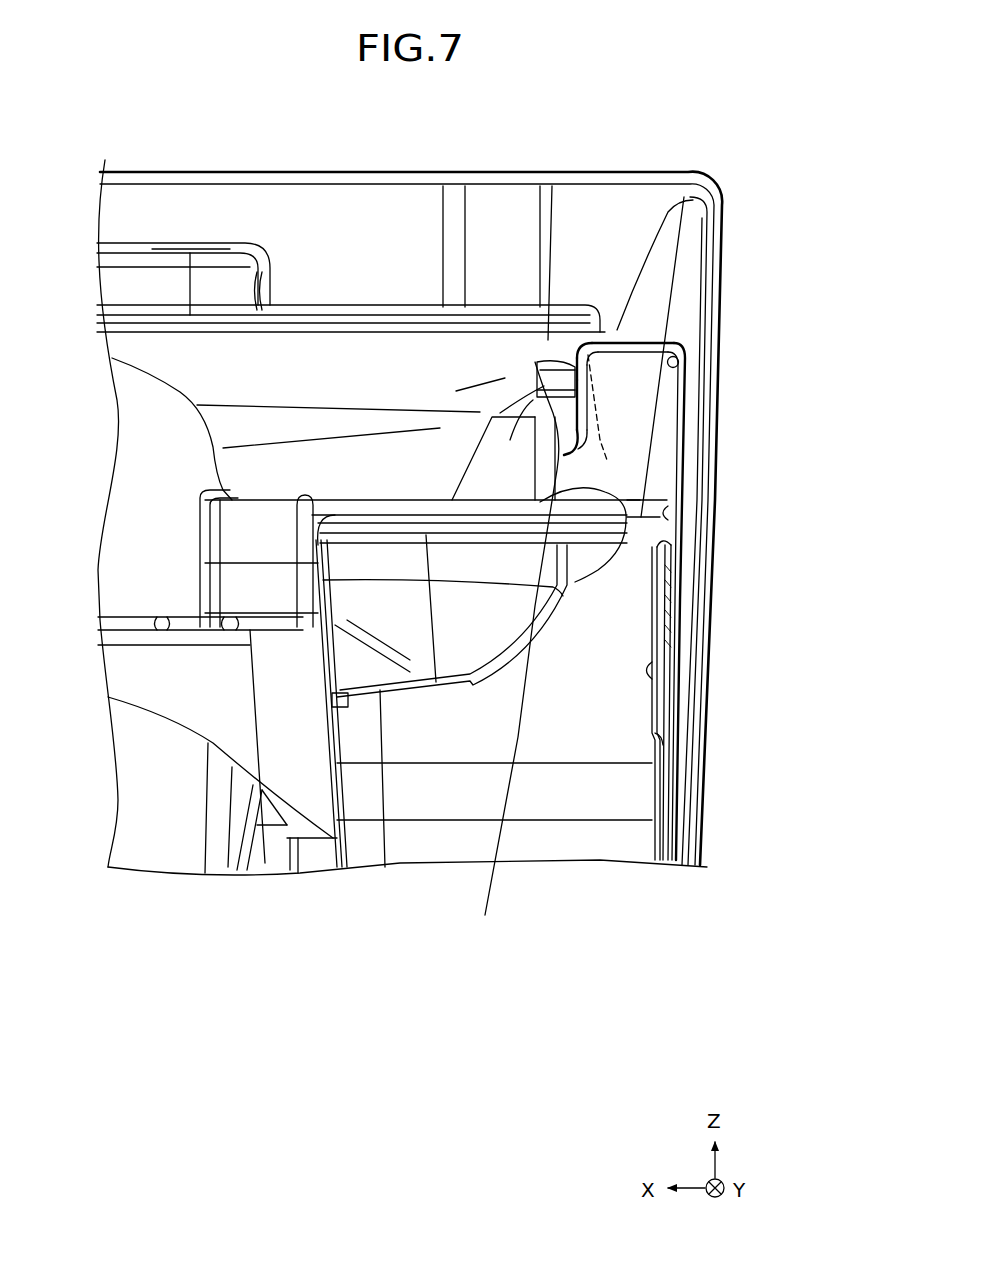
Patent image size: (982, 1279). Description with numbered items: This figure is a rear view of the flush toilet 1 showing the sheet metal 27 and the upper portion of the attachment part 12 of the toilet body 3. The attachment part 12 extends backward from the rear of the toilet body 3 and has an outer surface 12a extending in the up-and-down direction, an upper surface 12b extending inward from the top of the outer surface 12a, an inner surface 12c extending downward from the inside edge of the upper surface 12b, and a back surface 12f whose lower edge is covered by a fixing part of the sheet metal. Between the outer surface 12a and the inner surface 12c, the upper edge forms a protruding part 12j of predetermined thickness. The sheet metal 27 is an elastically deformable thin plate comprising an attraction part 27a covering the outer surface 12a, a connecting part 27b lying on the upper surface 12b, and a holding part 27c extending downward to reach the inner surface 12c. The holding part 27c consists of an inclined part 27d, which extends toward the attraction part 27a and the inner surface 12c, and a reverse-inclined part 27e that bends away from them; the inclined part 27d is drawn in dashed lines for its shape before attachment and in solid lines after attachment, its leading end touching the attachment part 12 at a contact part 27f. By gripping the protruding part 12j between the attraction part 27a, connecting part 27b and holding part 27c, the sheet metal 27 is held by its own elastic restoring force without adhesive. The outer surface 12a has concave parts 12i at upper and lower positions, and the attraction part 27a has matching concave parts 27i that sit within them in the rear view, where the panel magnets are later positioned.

The flush toilet 1 is at (760, 160).
The toilet body 3 is at (630, 167).
The attachment part 12 is at (425, 898).
The outer surface 12a is at (666, 514).
The upper surface 12b is at (608, 352).
The inner surface 12c is at (521, 650).
The back surface 12f is at (546, 843).
The concave parts 12i is at (648, 679).
The protruding part 12j is at (645, 436).
The sheet metal 27 is at (670, 820).
The attraction part 27a is at (683, 488).
The connecting part 27b is at (607, 343).
The holding part 27c is at (570, 345).
The inclined part 27d is at (560, 352).
The reverse-inclined part 27e is at (563, 453).
The contact part 27f is at (578, 368).
The concave parts 27i is at (673, 639).